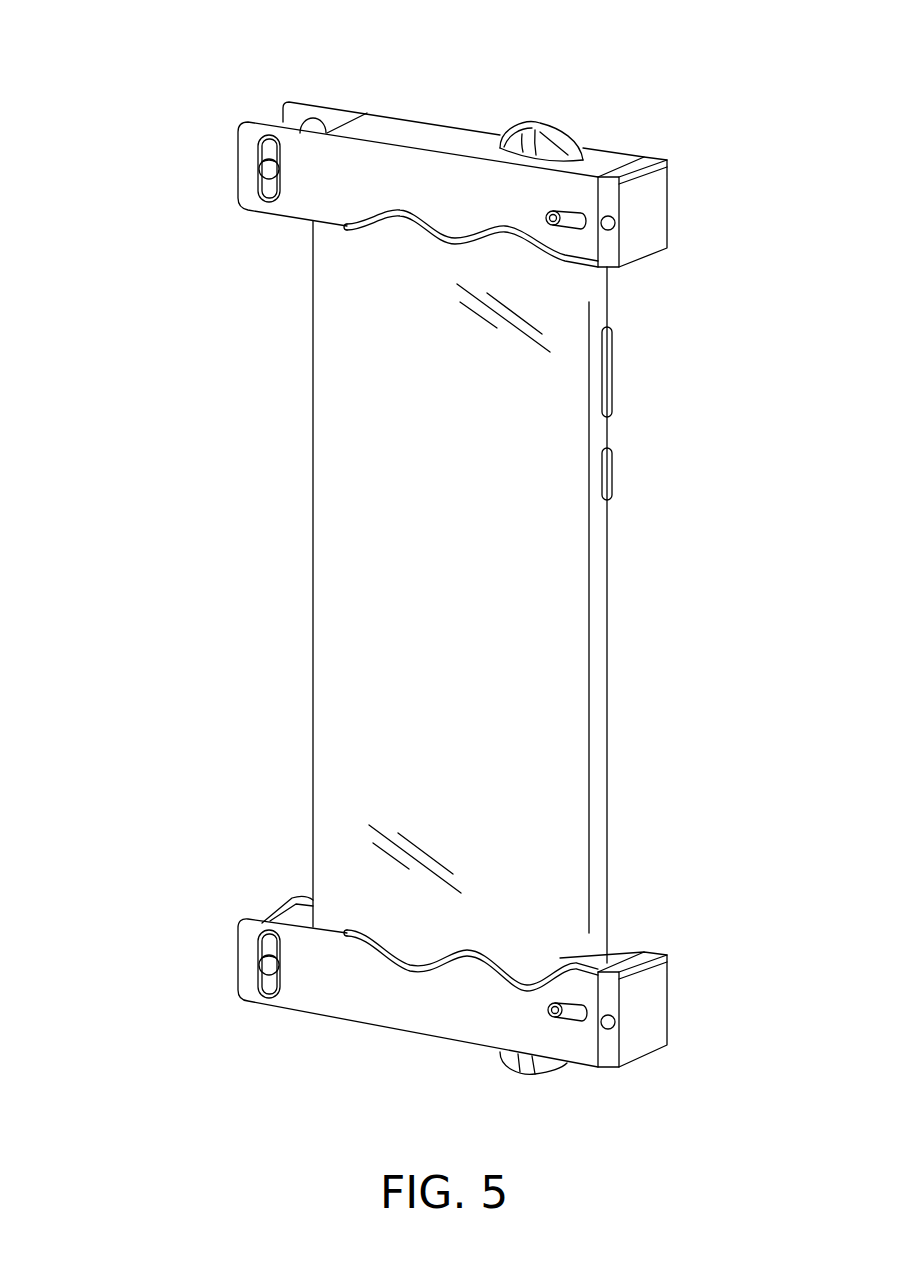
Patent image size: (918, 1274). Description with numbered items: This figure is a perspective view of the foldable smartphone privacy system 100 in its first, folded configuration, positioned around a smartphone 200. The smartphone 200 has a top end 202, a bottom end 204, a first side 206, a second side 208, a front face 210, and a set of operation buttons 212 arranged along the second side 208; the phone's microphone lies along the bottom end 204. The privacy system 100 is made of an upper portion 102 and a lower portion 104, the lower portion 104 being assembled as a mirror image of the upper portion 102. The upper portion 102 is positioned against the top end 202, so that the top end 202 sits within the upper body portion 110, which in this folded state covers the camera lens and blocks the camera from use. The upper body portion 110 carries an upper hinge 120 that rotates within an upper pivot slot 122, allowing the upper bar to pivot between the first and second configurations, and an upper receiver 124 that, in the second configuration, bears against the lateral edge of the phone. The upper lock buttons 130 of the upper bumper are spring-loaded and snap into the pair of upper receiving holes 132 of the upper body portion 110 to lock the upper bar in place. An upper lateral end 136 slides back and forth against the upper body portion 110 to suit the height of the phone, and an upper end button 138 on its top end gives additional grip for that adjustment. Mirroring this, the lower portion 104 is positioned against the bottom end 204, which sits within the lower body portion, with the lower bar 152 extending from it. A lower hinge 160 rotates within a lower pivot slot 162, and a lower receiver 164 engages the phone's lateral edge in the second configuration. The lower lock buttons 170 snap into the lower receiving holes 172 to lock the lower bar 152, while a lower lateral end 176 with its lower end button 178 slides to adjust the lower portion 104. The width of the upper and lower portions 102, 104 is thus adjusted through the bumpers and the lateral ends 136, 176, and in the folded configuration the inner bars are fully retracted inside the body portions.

The foldable smartphone privacy system 100 is at (232, 33).
The upper portion 102 is at (622, 108).
The lower portion 104 is at (222, 900).
The upper body portion 110 is at (385, 160).
The upper hinge 120 is at (258, 170).
The upper pivot slot 122 is at (260, 152).
The upper receiver 124 is at (543, 123).
The upper lock button 130 is at (560, 230).
The upper receiving holes 132 is at (622, 190).
The upper lateral end 136 is at (660, 195).
The upper end button 138 is at (616, 226).
The lower bar 152 is at (318, 992).
The lower hinge 160 is at (268, 967).
The lower pivot slot 162 is at (265, 995).
The lower receiver 164 is at (527, 1074).
The lower lock button 170 is at (577, 1052).
The lower receiving holes 172 is at (582, 1002).
The lower lateral end 176 is at (660, 977).
The lower end button 178 is at (620, 1022).
The smartphone 200 is at (355, 575).
The top end 202 is at (471, 242).
The bottom end 204 is at (471, 952).
The first side 206 is at (312, 705).
The second side 208 is at (600, 630).
The front face 210 is at (459, 588).
The operation buttons 212 is at (612, 462).